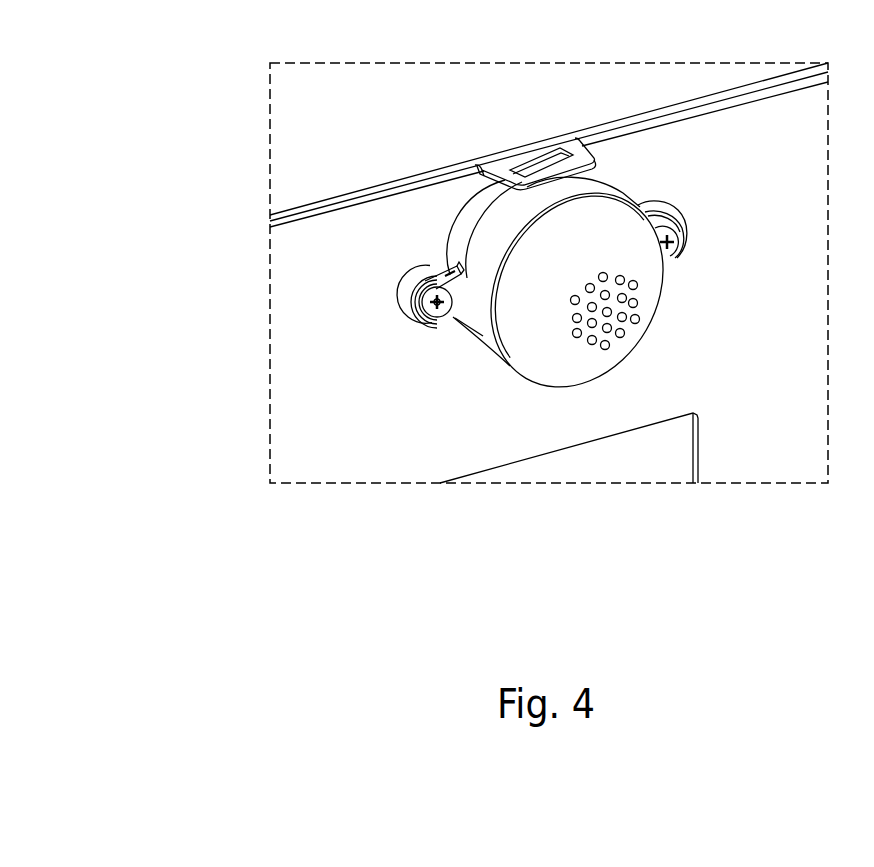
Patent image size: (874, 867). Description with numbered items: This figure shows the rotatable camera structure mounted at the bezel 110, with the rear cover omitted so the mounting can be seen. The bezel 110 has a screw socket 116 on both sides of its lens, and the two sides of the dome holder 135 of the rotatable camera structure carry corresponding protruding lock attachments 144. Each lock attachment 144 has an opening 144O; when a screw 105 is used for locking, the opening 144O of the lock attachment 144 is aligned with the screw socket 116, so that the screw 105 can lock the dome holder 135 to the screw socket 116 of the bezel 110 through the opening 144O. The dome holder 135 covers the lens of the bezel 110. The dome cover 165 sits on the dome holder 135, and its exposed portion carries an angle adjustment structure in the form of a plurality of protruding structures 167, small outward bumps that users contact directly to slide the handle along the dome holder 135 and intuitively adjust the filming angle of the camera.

The bezel 110 is at (312, 205).
The screw socket 116 is at (406, 279).
The lock attachment 144 is at (410, 299).
The opening of the lock attachment 144O is at (460, 284).
The screw 105 is at (414, 322).
The dome holder 135 is at (482, 328).
The dome cover 165 is at (647, 315).
The protruding structures 167 is at (605, 349).